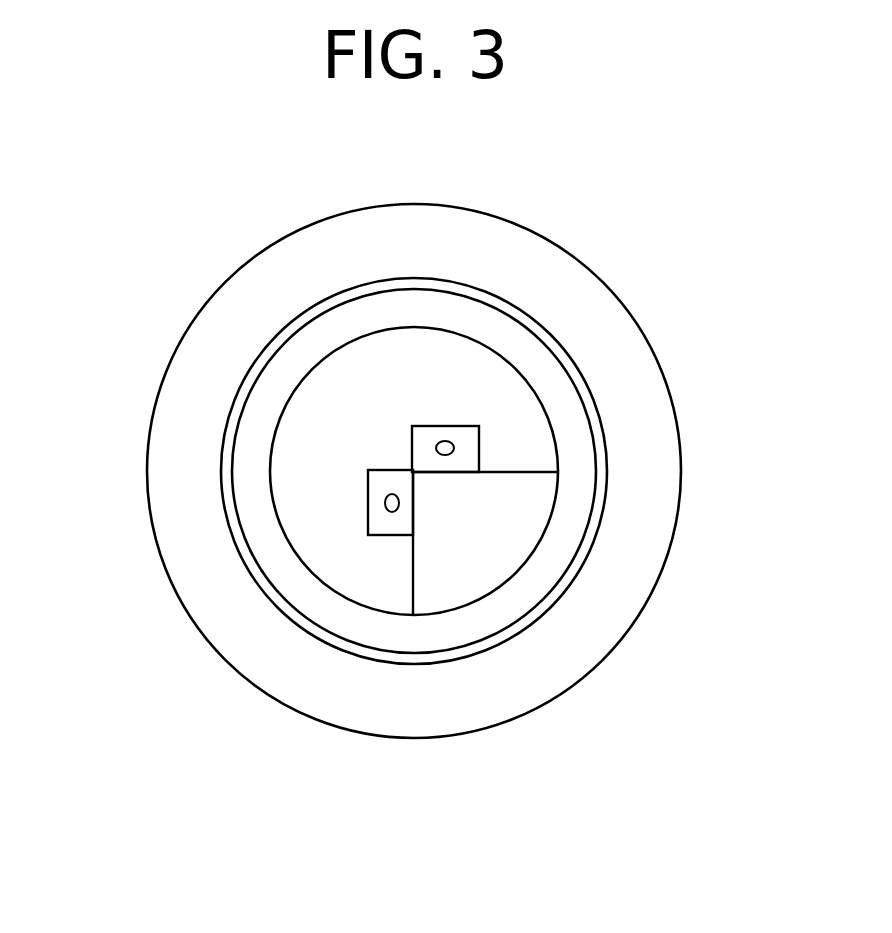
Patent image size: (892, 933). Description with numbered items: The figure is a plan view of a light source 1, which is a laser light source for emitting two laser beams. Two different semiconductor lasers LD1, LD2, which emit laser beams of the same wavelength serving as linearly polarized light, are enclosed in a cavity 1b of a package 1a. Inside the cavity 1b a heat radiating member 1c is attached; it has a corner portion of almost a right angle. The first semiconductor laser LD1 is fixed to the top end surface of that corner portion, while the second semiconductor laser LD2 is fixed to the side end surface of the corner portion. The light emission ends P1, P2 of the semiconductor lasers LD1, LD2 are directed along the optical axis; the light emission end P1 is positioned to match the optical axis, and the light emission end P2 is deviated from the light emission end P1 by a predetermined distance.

The light source 1 is at (613, 250).
The package 1a is at (223, 428).
The cavity 1b is at (335, 408).
The heat radiating member 1c is at (523, 540).
The first semiconductor laser LD1 is at (480, 449).
The second semiconductor laser LD2 is at (387, 537).
The light emission end P1 is at (443, 440).
The light emission end P2 is at (385, 500).